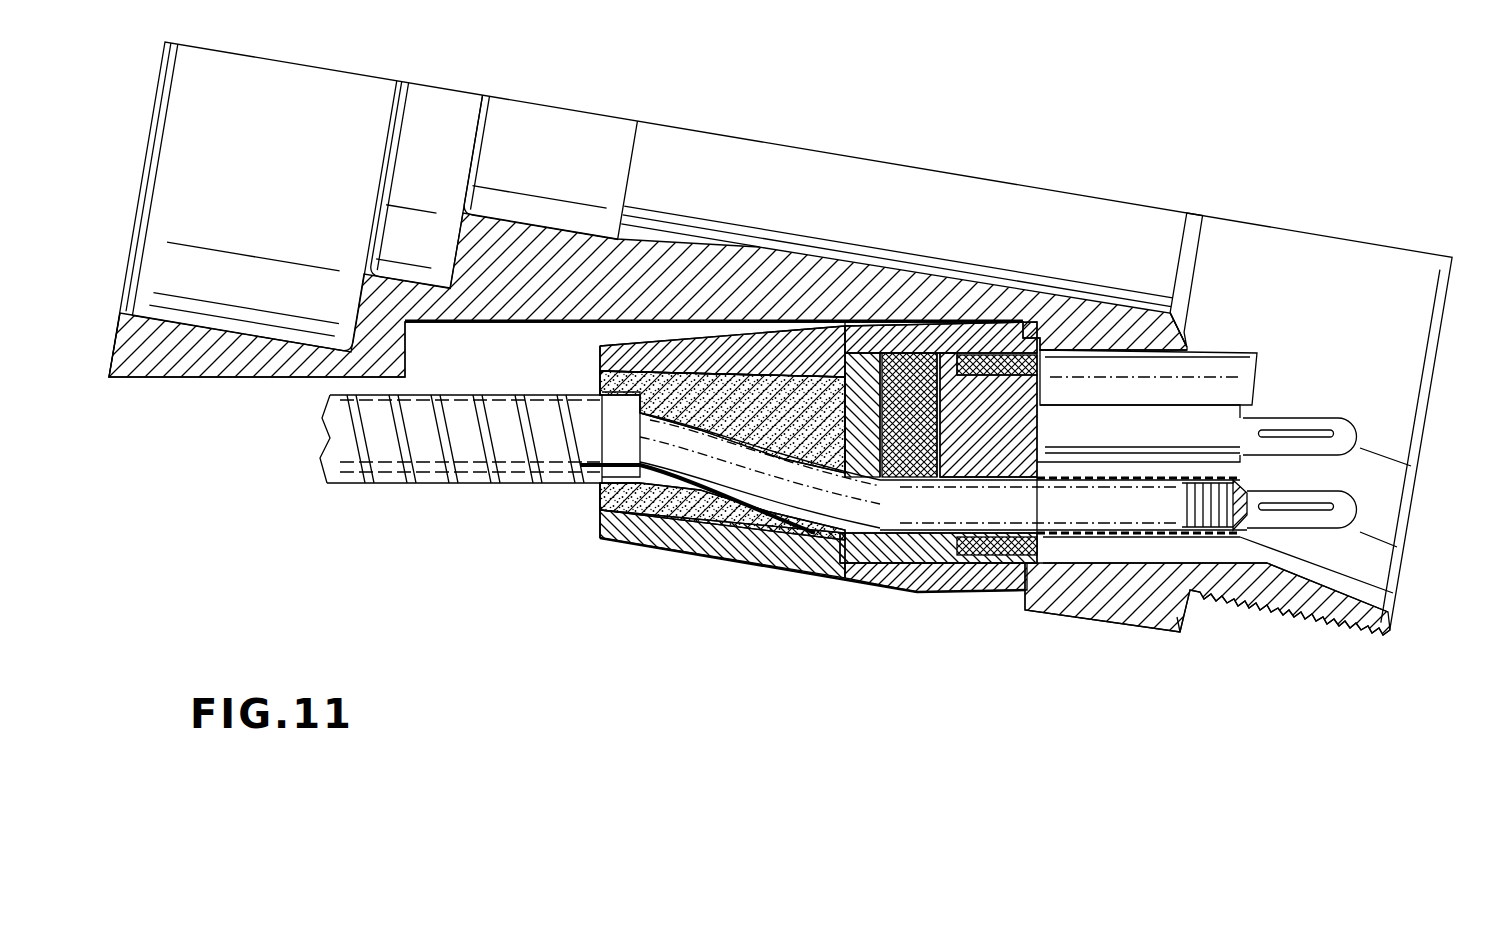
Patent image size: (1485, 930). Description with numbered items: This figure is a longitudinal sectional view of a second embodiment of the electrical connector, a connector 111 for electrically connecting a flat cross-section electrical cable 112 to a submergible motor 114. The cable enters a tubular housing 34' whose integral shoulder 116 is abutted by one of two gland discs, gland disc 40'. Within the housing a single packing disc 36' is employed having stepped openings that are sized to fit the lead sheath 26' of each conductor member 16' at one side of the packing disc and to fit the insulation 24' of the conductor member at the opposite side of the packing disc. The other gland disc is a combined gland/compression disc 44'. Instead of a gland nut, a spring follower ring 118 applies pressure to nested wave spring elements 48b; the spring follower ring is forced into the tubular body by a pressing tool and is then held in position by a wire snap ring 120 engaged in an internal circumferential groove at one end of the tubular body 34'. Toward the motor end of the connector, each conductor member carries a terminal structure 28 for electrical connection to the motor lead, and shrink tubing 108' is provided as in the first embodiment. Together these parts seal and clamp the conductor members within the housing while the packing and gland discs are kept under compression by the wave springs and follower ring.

The connector 111 is at (592, 560).
The flat cross-section electrical cable 112 is at (350, 487).
The submergible motor 114 is at (1178, 618).
The integral shoulder 116 is at (843, 373).
The spring follower ring 118 is at (1083, 310).
The wire snap ring 120 is at (1033, 357).
The conductor member 16' is at (690, 481).
The lead sheath 26' is at (713, 495).
The tubular housing 34' is at (812, 571).
The packing disc 36' is at (891, 506).
The gland disc 40' is at (818, 494).
The insulation 24' is at (969, 511).
The combined gland/compression disc 44' is at (1063, 586).
The nested wave spring elements 48b is at (997, 588).
The shrink tubing 108' is at (1169, 596).
The terminal structure 28 is at (1300, 530).